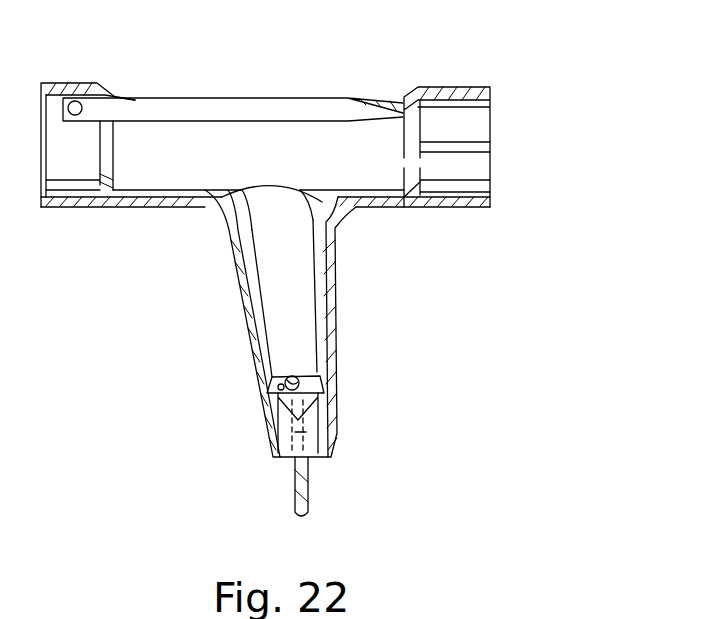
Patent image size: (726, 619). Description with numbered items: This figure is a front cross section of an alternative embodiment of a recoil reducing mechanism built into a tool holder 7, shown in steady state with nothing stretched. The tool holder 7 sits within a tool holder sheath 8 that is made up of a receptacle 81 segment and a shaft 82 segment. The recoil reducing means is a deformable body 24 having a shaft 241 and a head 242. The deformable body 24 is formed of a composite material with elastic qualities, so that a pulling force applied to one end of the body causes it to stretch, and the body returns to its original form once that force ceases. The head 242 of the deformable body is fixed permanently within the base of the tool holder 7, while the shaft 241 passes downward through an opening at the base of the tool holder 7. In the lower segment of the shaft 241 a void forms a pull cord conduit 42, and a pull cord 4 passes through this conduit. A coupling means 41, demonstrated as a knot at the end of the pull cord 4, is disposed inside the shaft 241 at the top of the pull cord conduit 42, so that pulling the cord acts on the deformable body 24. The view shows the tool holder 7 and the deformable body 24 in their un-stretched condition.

The tool holder 7 is at (318, 92).
The tool holder sheath 8 is at (218, 253).
The receptacle segment 81 is at (110, 208).
The shaft segment 82 is at (246, 333).
The deformable body 24 is at (313, 267).
The shaft of deformable body 241 is at (295, 313).
The head of deformable body 242 is at (333, 228).
The coupling means 41 is at (300, 371).
The pull cord conduit 42 is at (300, 431).
The pull cord 4 is at (310, 486).